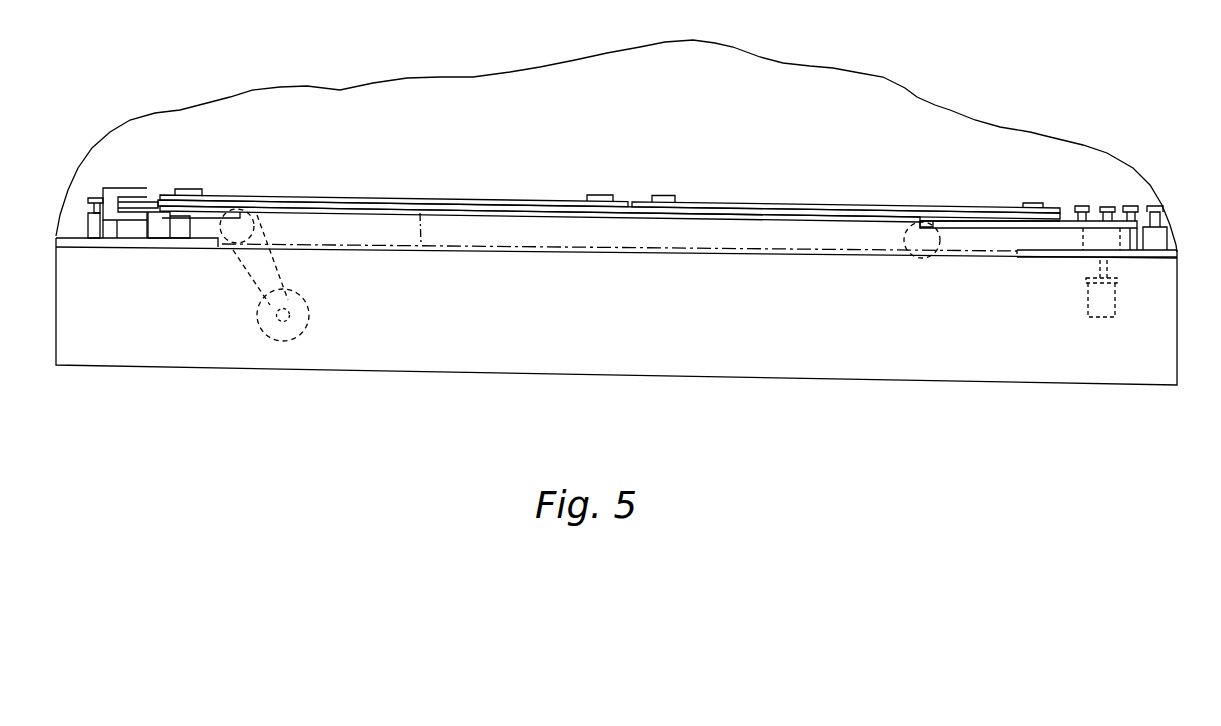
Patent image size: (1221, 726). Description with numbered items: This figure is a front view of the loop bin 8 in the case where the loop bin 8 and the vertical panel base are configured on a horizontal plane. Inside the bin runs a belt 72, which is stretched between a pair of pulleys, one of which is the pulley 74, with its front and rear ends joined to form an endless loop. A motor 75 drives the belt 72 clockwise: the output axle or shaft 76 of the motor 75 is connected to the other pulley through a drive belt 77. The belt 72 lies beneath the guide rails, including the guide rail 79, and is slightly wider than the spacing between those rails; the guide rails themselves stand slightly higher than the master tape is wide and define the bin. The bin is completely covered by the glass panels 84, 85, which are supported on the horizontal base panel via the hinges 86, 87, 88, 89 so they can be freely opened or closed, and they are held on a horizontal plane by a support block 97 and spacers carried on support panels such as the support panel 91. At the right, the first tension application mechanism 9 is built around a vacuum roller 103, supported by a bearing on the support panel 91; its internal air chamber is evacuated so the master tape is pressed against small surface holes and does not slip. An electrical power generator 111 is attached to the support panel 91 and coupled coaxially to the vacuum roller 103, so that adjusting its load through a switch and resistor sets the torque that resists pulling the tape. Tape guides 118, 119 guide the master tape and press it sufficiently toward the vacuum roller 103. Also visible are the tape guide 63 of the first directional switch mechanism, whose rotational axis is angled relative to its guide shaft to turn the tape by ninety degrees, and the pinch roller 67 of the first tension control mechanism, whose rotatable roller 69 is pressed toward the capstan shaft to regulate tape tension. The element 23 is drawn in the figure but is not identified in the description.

The loop bin 8 is at (585, 233).
The first tension application mechanism 9 is at (1100, 215).
The pivot 23 is at (236, 244).
The tape guide 63 is at (92, 198).
The pinch roller 67 is at (115, 187).
The rotatable roller 69 is at (138, 188).
The belt 72 is at (421, 244).
The pulley 74 is at (925, 258).
The motor 75 is at (270, 328).
The output axle or shaft 76 is at (293, 314).
The drive belt 77 is at (252, 283).
The guide rail 79 is at (408, 206).
The glass panel 84 is at (330, 197).
The glass panel 85 is at (775, 204).
The hinge 86 is at (190, 189).
The hinge 87 is at (600, 195).
The hinge 88 is at (660, 196).
The hinge 89 is at (1032, 203).
The support panel 91 is at (958, 221).
The support block 97 is at (352, 233).
The vacuum roller 103 is at (1107, 207).
The electrical power generator 111 is at (1113, 297).
The tape guide 118 is at (1084, 206).
The tape guide 119 is at (1132, 206).